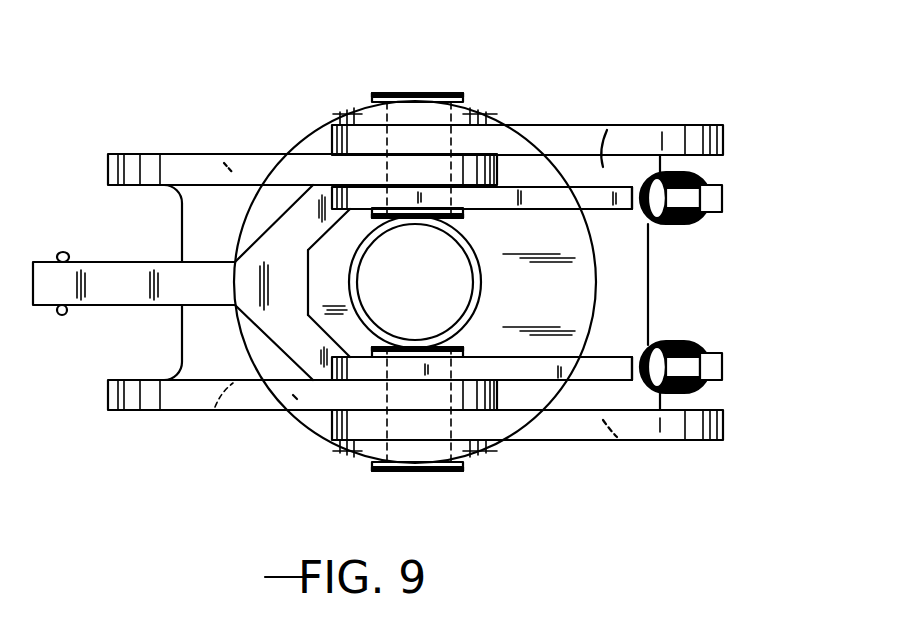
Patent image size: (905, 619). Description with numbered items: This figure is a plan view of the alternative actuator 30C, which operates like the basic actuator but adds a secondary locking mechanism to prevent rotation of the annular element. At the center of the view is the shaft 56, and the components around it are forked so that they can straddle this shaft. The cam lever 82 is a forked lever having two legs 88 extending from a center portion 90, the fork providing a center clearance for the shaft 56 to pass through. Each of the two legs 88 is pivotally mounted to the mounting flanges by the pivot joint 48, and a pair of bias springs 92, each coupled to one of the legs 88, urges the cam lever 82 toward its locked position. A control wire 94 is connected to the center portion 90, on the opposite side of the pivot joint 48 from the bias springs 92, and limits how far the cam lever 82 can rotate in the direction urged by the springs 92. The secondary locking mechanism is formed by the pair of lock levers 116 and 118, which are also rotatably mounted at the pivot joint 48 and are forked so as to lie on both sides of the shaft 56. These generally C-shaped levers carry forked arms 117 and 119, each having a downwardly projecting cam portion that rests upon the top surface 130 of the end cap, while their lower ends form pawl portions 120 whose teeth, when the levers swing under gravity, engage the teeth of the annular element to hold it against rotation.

The actuator 30C is at (313, 102).
The pivot joint 48 is at (420, 93).
The shaft 56 is at (367, 243).
The cam lever 82 is at (284, 354).
The legs 88 is at (572, 185).
The center portion 90 is at (128, 288).
The bias springs 92 is at (685, 238).
The control wire 94 is at (65, 252).
The lock lever 116 is at (140, 153).
The forked arm 117 is at (222, 160).
The lock lever 118 is at (677, 123).
The forked arm 119 is at (510, 140).
The pawl portions 120 is at (200, 328).
The top surface 130 is at (577, 283).